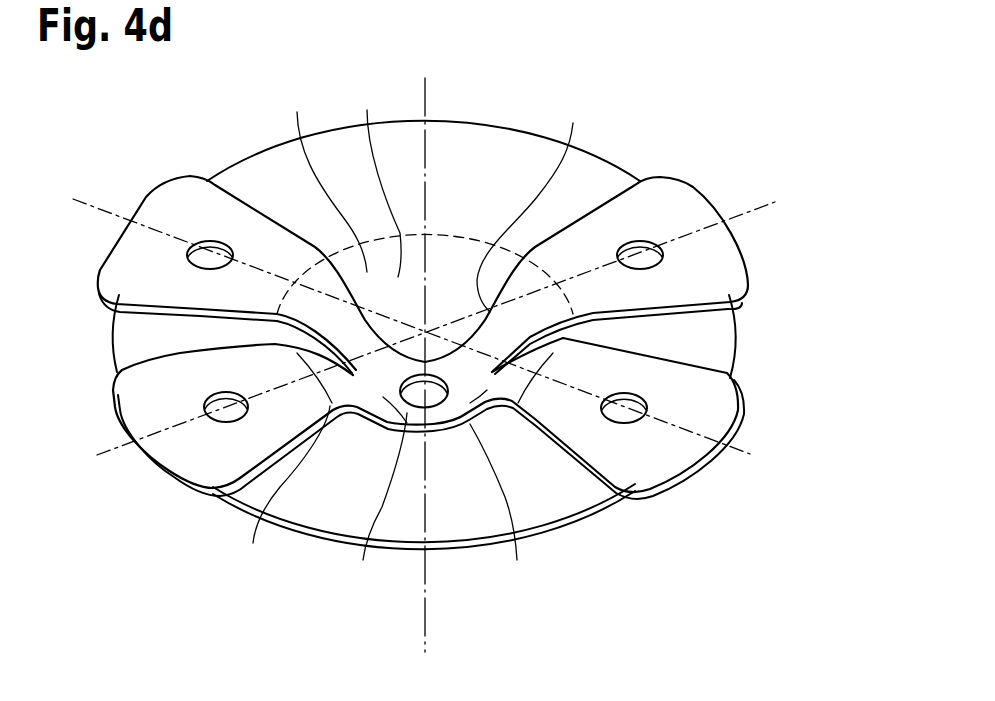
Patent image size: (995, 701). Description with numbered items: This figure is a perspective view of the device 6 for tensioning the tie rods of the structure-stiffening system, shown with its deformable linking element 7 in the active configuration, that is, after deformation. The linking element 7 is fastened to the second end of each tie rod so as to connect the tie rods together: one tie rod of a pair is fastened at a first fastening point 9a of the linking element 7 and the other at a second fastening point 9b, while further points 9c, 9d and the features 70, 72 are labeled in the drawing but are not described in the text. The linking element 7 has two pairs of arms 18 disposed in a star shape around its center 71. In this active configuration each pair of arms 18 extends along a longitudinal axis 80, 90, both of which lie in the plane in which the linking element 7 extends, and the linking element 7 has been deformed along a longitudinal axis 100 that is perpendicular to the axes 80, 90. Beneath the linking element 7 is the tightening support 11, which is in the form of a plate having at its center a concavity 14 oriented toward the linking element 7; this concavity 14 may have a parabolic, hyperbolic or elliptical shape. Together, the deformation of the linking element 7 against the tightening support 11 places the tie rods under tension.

The device for tensioning the tie rods 6 is at (230, 111).
The deformable linking element 7 is at (367, 410).
The first fastening point 9a is at (208, 248).
The second fastening point 9b is at (622, 415).
The third fastening hole 9c is at (218, 393).
The fourth fastening hole 9d is at (645, 263).
The tightening support 11 is at (457, 172).
The concavity 14 is at (377, 179).
The arms 18 is at (137, 267).
The disc groove 70 is at (415, 338).
The center of the linking element 71 is at (378, 504).
The lobe edge rim 72 is at (160, 214).
The longitudinal axis 80 is at (752, 217).
The longitudinal axis 90 is at (727, 448).
The longitudinal axis 100 is at (423, 605).